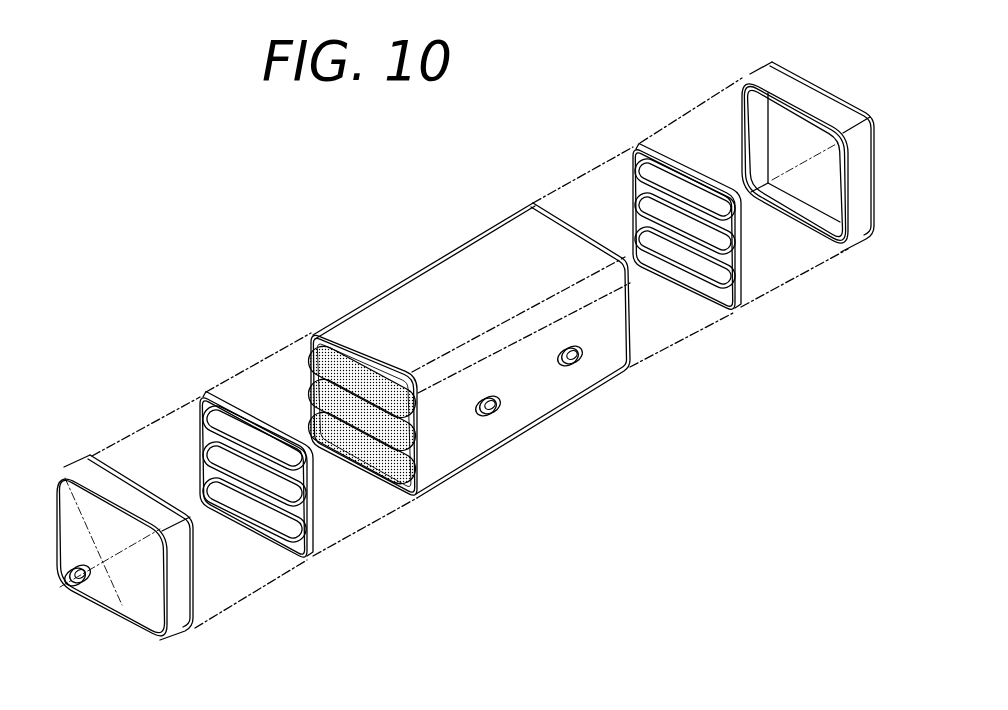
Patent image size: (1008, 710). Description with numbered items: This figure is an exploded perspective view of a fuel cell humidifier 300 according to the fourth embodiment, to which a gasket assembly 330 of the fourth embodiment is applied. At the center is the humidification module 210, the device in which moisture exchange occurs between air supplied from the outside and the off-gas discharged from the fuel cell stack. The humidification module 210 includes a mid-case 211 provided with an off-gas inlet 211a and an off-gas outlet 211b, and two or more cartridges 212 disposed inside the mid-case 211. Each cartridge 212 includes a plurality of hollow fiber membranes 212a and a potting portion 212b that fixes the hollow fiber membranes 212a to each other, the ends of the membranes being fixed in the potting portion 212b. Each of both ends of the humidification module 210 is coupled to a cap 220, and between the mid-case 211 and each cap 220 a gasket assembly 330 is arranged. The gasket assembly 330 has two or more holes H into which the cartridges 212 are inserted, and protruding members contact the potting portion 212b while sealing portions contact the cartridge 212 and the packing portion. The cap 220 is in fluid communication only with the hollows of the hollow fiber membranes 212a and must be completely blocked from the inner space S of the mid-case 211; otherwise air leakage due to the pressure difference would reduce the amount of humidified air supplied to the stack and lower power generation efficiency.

The fuel cell humidifier 300 is at (512, 120).
The humidification module 210 is at (490, 427).
The mid-case 211 is at (544, 435).
The off-gas inlet 211a is at (490, 420).
The off-gas outlet 211b is at (573, 368).
The cartridge 212 is at (384, 513).
The hollow fiber membranes 212a is at (363, 465).
The potting portion 212b is at (400, 503).
The cap 220 is at (82, 462).
The gasket assembly 330 is at (206, 380).
The hole H is at (267, 517).
The inner space S is at (309, 335).